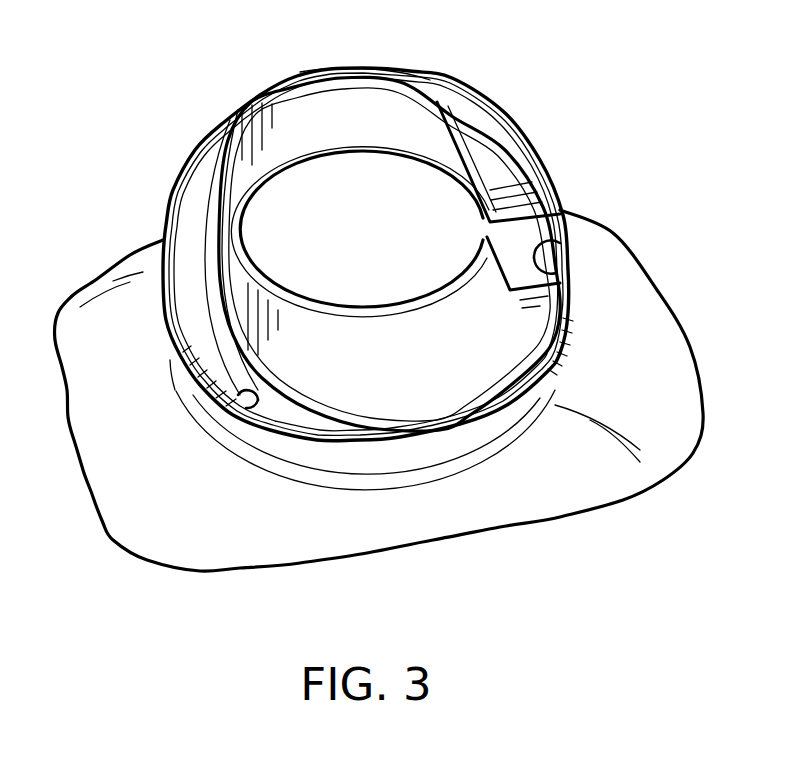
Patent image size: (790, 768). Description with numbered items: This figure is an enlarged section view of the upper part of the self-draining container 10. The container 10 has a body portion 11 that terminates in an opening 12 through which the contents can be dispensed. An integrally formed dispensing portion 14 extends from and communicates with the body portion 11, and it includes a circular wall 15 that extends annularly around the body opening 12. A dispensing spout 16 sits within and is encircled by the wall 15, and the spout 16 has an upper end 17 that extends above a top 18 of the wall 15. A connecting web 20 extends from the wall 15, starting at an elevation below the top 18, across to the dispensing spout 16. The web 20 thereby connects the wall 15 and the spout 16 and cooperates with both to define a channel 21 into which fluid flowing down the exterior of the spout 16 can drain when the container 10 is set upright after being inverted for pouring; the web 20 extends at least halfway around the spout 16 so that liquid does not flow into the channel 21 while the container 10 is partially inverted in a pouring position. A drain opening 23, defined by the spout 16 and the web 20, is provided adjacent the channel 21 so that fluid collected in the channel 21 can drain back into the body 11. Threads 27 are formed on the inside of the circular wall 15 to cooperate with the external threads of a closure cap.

The self-draining container 10 is at (104, 530).
The body portion 11 is at (227, 536).
The opening 12 is at (553, 240).
The dispensing portion 14 is at (452, 78).
The circular wall 15 is at (505, 113).
The dispensing spout 16 is at (290, 80).
The upper end 17 is at (220, 140).
The top 18 is at (163, 240).
The connecting web 20 is at (492, 389).
The channel 21 is at (245, 388).
The drain opening 23 is at (489, 221).
The threads 27 is at (183, 186).